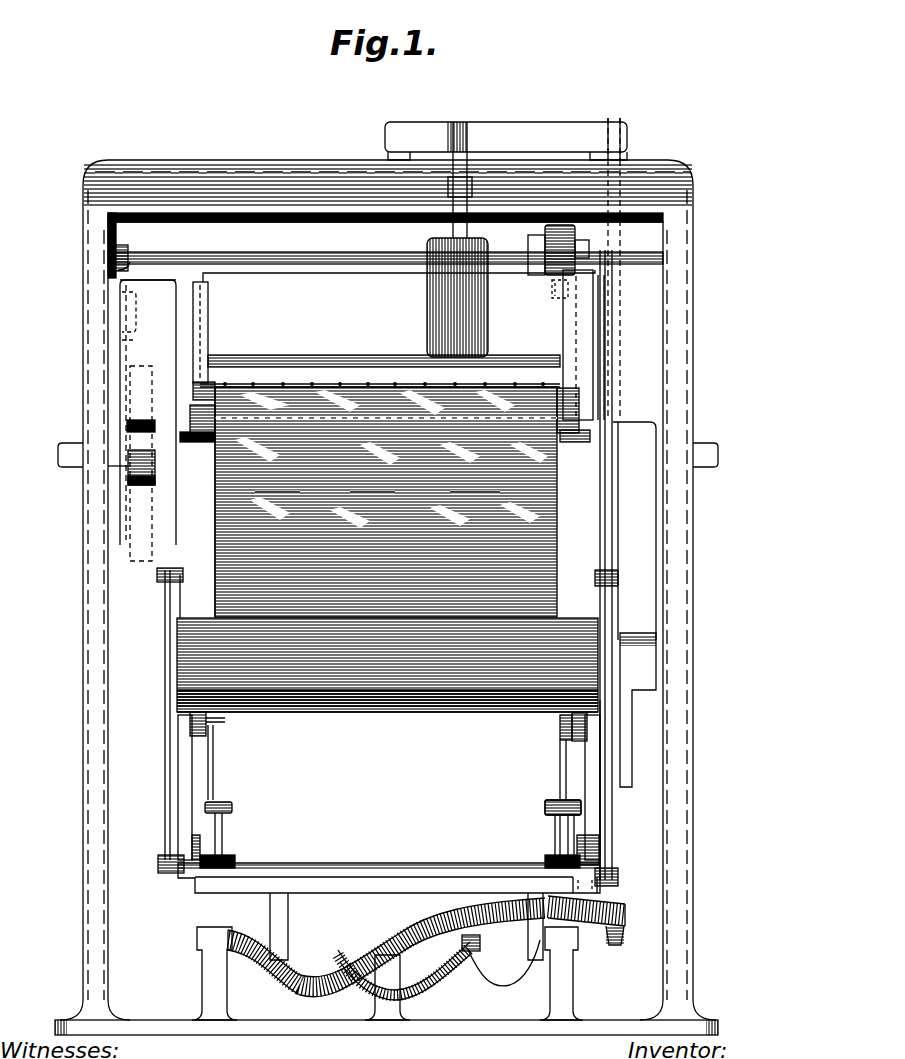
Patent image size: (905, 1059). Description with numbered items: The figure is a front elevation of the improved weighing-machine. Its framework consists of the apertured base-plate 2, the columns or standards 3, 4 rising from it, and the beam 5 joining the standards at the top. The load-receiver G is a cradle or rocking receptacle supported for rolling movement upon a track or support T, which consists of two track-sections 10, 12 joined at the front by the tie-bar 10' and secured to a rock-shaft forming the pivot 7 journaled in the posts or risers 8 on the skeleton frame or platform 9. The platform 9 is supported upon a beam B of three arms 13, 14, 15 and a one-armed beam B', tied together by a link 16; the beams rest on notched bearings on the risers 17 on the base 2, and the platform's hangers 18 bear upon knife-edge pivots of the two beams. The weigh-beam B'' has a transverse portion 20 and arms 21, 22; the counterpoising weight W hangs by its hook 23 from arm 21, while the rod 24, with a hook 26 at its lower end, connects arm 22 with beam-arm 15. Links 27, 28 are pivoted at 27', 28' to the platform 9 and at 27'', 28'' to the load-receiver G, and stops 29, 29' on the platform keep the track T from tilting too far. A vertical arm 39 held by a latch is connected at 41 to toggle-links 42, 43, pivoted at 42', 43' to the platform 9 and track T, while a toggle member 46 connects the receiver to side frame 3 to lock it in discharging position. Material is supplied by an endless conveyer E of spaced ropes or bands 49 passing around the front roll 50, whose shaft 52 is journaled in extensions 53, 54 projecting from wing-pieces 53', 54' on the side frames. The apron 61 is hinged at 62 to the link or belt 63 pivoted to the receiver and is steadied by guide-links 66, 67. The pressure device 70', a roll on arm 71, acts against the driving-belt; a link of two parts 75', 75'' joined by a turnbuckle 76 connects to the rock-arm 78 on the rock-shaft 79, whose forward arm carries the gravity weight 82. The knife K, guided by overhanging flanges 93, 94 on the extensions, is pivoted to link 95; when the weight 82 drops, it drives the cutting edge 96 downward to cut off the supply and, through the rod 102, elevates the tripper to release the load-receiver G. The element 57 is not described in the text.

The base-plate 2 is at (350, 1035).
The column or standard 3 is at (688, 612).
The column or standard 4 is at (83, 612).
The beam 5 is at (388, 590).
The pivot 7 is at (182, 720).
The posts or risers 8 is at (182, 782).
The skeleton frame or platform 9 is at (343, 885).
The track-section 10 is at (612, 727).
The tie-bar 10' is at (387, 730).
The track-section 12 is at (180, 693).
The arm of beam B 13 is at (280, 985).
The arm of beam B 14 is at (512, 980).
The arm of beam B 15 is at (612, 898).
The link 16 is at (472, 952).
The risers 17 is at (200, 985).
The hangers 18 is at (284, 906).
The transverse portion 20 is at (537, 134).
The beam-arm 21 is at (468, 170).
The beam-arm 22 is at (622, 142).
The hook 23 is at (453, 174).
The rod 24 is at (614, 514).
The hook 26 is at (616, 946).
The link 27 is at (624, 790).
The pivot 27' is at (623, 868).
The pivot 27'' is at (621, 573).
The link 28 is at (152, 715).
The pivot 28' is at (153, 876).
The pivot 28'' is at (151, 590).
The stop 29 is at (569, 864).
The stop 29' is at (225, 847).
The vertical arm 39 is at (570, 833).
The pivot 41 is at (545, 808).
The toggle-link 42 is at (393, 829).
The pivot 42' is at (390, 871).
The toggle-link 43 is at (387, 762).
The pivot 43' is at (541, 731).
The toggle member 46 is at (626, 757).
The ropes or bands 49 is at (340, 382).
The front roll 50 is at (210, 388).
The shaft 52 is at (152, 378).
The extension 53 is at (561, 345).
The wing-piece 53' is at (634, 524).
The extension 54 is at (149, 412).
The wing-piece 54' is at (148, 270).
The block 57 is at (150, 432).
The apron 61 is at (386, 502).
The hinge 62 is at (385, 488).
The link or belt 63 is at (215, 527).
The guide-link 66 is at (570, 442).
The guide-link 67 is at (206, 442).
The pressure device 70' is at (156, 478).
The arm 71 is at (124, 466).
The link part 75' is at (146, 251).
The link part 75'' is at (138, 341).
The turnbuckle 76 is at (136, 310).
The rock-arm 78 is at (122, 250).
The rock-shaft 79 is at (290, 258).
The gravity device or weight 82 is at (562, 226).
The overhanging flange 93 is at (570, 327).
The overhanging flange 94 is at (208, 314).
The link 95 is at (535, 268).
The cutting edge 96 is at (342, 360).
The rod 102 is at (603, 330).
The beam B is at (386, 948).
The beam B' is at (405, 972).
The weigh-beam B'' is at (466, 127).
The endless conveyer E is at (380, 377).
The load-receiver G is at (200, 632).
The knife K is at (399, 298).
The track or support T is at (222, 731).
The counterpoising weight W is at (457, 297).